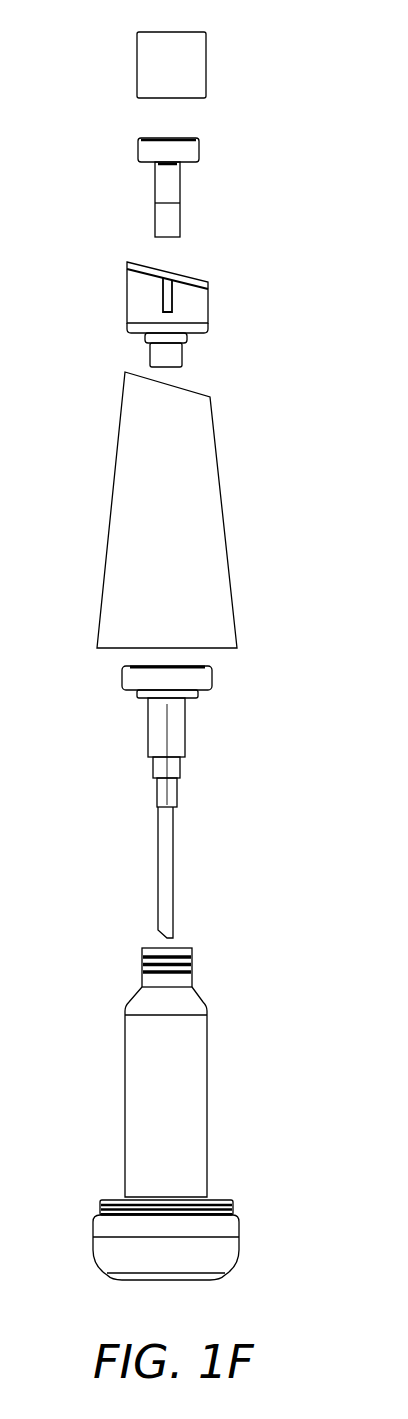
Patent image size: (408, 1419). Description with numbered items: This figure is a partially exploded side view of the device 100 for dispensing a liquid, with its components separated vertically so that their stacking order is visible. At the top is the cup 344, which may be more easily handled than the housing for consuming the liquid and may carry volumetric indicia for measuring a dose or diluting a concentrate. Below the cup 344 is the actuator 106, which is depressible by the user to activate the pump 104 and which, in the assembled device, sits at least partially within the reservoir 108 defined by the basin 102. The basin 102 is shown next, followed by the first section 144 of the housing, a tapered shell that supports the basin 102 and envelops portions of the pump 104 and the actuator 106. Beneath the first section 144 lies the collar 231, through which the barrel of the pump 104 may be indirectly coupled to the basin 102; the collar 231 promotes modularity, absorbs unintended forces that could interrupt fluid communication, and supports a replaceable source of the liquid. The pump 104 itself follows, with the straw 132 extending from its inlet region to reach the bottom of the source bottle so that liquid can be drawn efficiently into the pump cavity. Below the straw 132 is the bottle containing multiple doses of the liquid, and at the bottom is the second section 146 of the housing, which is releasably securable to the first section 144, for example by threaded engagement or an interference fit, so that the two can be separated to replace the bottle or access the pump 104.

The device 100 is at (315, 73).
The cup 344 is at (147, 63).
The actuator 106 is at (157, 190).
The basin 102 is at (137, 315).
The first section 144 is at (135, 498).
The collar 231 is at (207, 683).
The pump 104 is at (155, 753).
The straw 132 is at (168, 907).
The reservoir 108 is at (147, 1095).
The second section 146 is at (112, 1257).